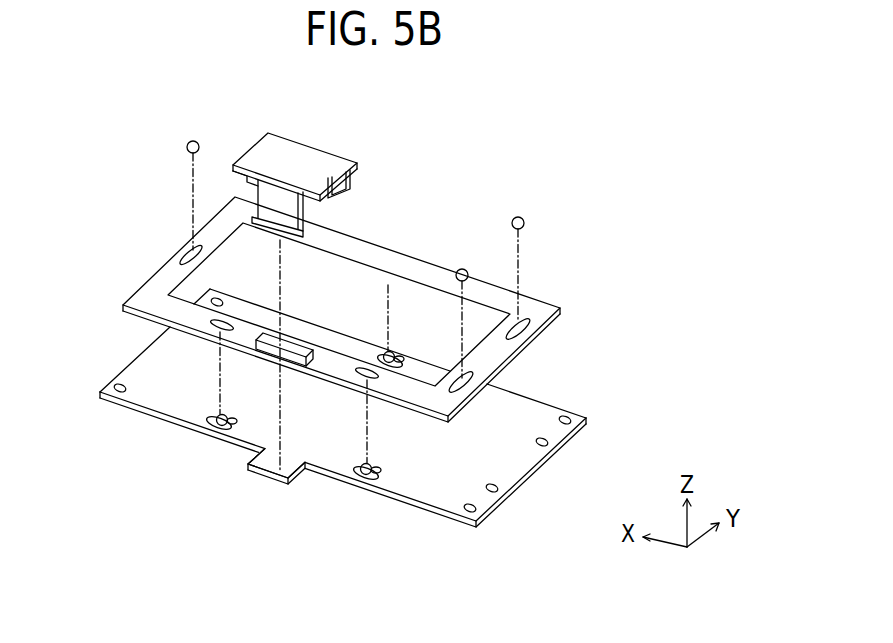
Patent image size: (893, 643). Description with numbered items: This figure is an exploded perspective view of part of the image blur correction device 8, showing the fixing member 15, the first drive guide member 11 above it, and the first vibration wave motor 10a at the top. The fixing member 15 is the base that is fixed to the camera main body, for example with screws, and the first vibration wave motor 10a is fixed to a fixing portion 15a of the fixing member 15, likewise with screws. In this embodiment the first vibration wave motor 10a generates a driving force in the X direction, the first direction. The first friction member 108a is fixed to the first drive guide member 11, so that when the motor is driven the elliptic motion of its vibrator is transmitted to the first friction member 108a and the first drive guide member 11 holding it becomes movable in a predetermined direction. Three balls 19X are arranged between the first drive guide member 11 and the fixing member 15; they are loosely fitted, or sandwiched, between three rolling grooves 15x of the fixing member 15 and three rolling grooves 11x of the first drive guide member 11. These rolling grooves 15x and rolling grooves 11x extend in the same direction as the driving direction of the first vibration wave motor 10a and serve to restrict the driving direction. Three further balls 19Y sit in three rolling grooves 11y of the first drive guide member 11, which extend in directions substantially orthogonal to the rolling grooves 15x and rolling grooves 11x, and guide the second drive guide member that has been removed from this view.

The image blur correction device 8 is at (635, 126).
The first vibration wave motor 10a is at (330, 171).
The first drive guide member 11 is at (152, 280).
The rolling grooves 11x is at (215, 327).
The rolling grooves 11y is at (183, 255).
The fixing member 15 is at (150, 358).
The fixing portion 15a is at (282, 472).
The rolling grooves 15x is at (398, 362).
The balls 19X is at (391, 351).
The balls 19Y is at (199, 143).
The first friction member 108a is at (297, 347).